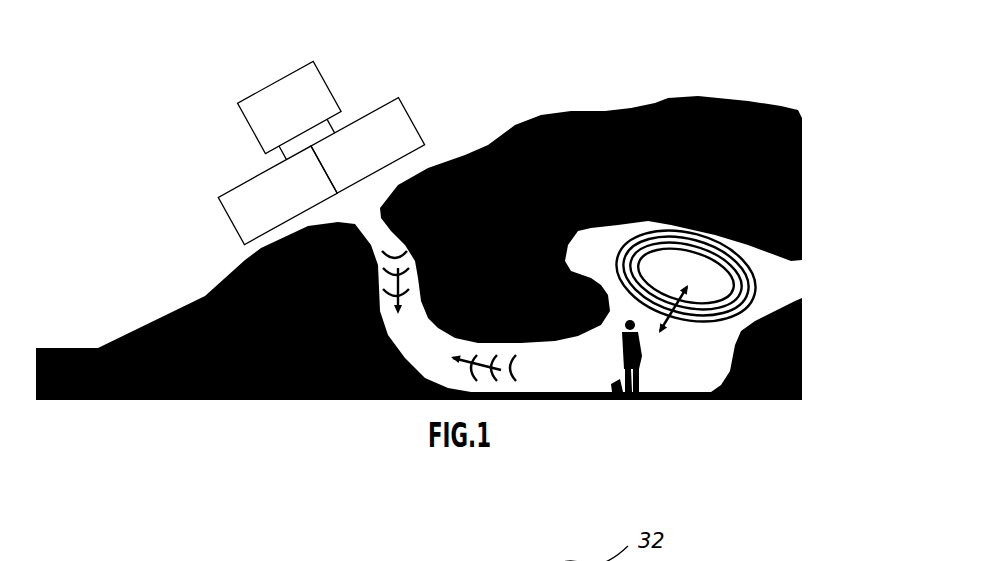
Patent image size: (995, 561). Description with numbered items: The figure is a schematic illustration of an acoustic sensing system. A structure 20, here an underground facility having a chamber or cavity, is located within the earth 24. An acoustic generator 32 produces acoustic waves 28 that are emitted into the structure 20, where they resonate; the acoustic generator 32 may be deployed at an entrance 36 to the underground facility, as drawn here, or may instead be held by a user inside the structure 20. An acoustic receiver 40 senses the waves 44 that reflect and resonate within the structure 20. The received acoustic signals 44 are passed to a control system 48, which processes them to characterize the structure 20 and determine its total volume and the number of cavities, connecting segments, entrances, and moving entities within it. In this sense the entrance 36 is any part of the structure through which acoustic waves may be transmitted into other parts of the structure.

The structure 20 is at (762, 270).
The earth 24 is at (792, 151).
The acoustic waves 28 is at (398, 272).
The acoustic generator 32 is at (363, 104).
The entrance 36 is at (357, 195).
The acoustic receiver 40 is at (237, 175).
The waves 44 is at (498, 346).
The control system 48 is at (274, 70).